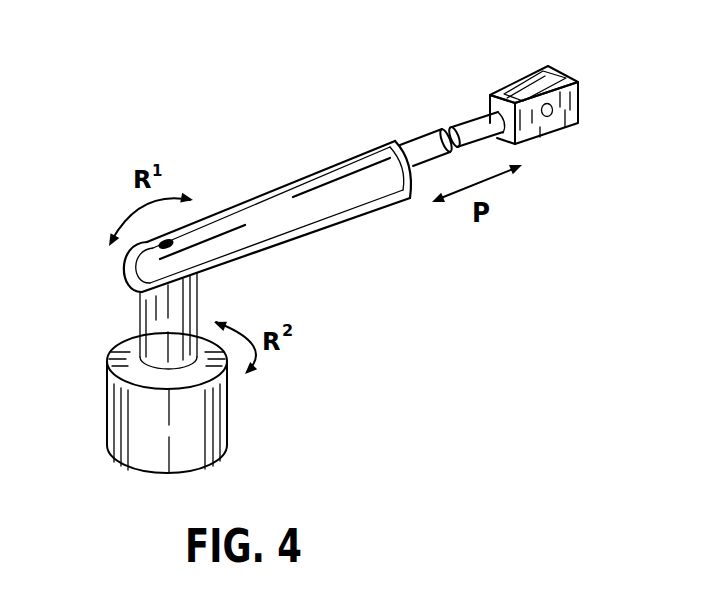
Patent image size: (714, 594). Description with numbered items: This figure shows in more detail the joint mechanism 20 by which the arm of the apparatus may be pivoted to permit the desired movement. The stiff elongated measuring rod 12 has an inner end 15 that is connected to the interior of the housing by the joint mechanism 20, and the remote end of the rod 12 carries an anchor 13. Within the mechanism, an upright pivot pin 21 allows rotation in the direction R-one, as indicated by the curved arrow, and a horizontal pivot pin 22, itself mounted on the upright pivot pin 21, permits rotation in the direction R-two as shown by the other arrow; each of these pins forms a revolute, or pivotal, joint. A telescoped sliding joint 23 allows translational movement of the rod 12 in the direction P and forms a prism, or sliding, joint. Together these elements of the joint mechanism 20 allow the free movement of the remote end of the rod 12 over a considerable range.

The measuring rod 12 is at (471, 120).
The anchor 13 is at (495, 90).
The inner end of the rod 15 is at (425, 136).
The joint mechanism 20 is at (104, 268).
The upright pivot pin 21 is at (107, 394).
The horizontal pivot pin 22 is at (174, 243).
The telescoped sliding joint 23 is at (352, 155).